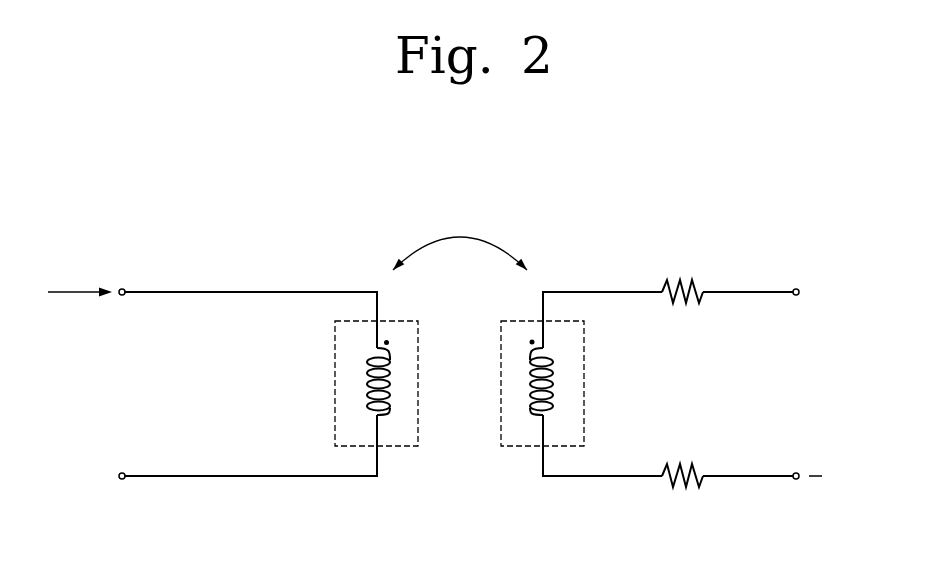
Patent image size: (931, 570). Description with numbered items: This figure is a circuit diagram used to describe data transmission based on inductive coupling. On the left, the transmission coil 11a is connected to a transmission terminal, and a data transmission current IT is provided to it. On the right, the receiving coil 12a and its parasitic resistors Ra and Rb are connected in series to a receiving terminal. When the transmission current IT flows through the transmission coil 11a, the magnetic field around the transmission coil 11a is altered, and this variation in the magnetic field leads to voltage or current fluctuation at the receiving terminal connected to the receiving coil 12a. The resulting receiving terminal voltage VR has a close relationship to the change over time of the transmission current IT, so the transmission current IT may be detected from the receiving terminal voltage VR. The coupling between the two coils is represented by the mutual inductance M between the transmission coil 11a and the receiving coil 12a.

The transmission coil 11a is at (403, 446).
The receiving coil 12a is at (513, 448).
The parasitic resistor Ra is at (682, 276).
The parasitic resistor Rb is at (682, 460).
The mutual inductance M is at (460, 240).
The transmission current IT is at (80, 275).
The receiving terminal voltage VR is at (820, 377).